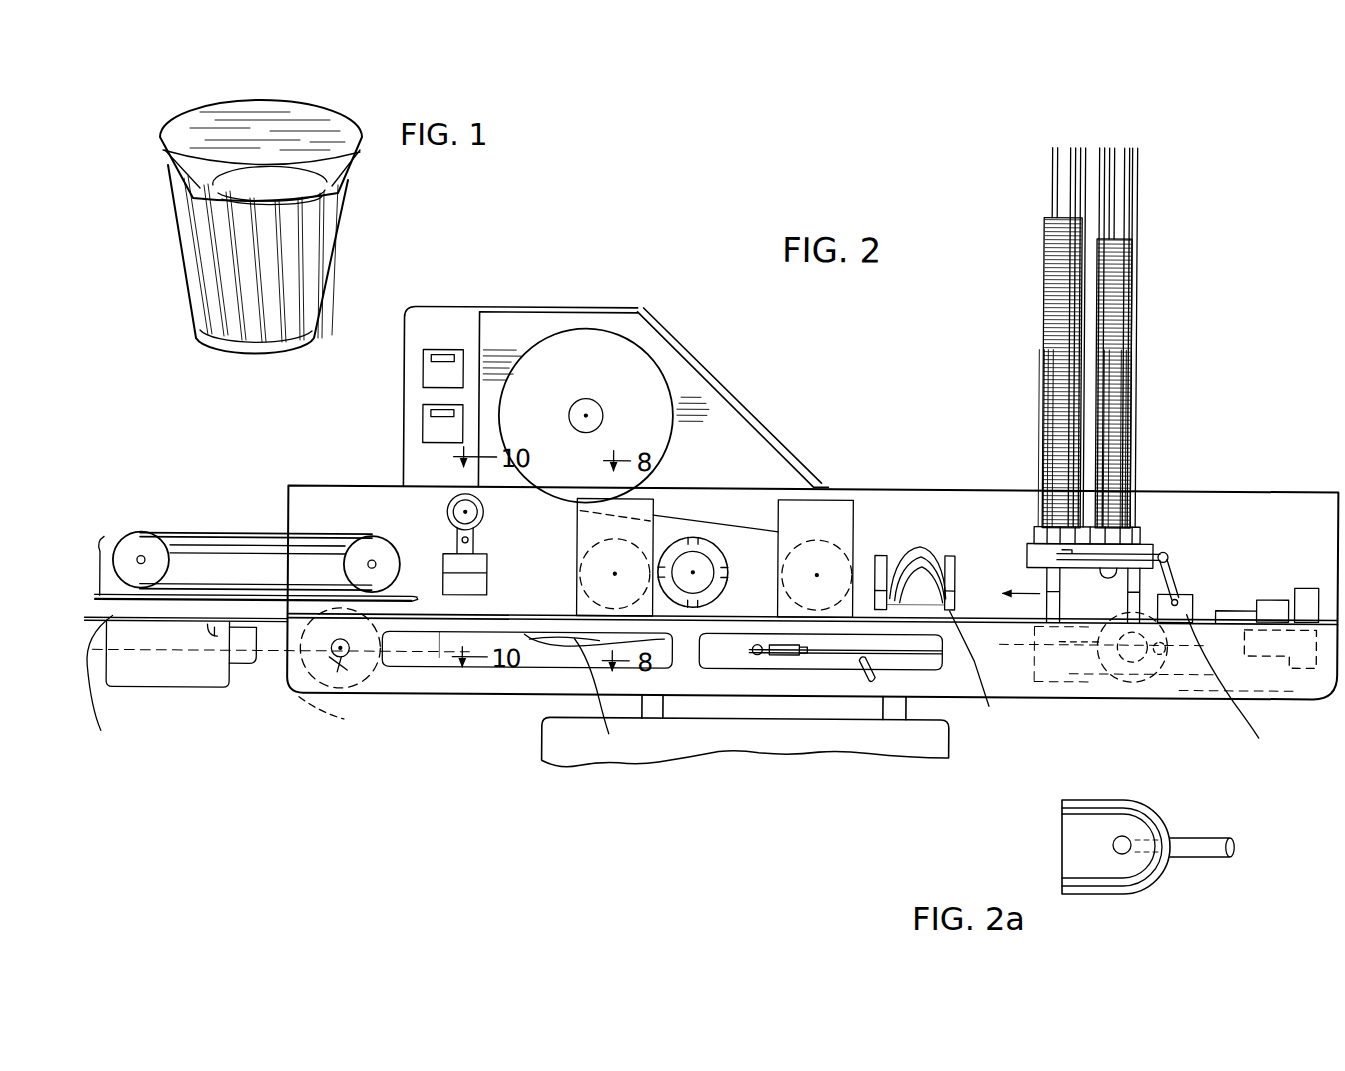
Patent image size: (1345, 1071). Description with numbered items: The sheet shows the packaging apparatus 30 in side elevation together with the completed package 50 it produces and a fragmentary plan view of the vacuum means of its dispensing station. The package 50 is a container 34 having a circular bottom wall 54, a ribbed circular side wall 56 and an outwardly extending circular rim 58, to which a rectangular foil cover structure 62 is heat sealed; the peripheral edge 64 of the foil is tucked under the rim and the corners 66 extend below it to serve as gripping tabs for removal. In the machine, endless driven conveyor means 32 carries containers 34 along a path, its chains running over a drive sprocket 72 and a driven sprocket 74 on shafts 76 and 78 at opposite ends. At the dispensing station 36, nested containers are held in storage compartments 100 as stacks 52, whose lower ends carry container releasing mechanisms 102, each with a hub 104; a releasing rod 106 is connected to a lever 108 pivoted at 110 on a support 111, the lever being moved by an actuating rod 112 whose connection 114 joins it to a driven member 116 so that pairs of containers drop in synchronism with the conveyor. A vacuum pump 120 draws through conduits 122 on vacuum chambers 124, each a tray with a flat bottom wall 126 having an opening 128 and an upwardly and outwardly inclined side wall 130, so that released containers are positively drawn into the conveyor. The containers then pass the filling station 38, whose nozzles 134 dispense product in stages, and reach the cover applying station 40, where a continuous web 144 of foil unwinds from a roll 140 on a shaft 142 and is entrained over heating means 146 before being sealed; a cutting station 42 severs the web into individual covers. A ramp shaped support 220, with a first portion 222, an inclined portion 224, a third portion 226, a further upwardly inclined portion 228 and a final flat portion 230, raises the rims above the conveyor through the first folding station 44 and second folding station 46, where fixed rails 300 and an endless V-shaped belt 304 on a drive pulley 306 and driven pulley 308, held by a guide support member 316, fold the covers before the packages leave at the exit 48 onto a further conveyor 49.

In FIG. 2, the packaging apparatus 30 is at (567, 245).
In FIG. 2, the endless driven conveyor means 32 is at (1178, 583).
In FIG. 1, the container 34 is at (188, 290).
In FIG. 2, the container 34 is at (953, 553).
In FIG. 2, the dispensing station 36 is at (1152, 520).
In FIG. 2, the filling station 38 is at (920, 543).
In FIG. 2, the cover applying station 40 is at (828, 478).
In FIG. 2, the cutting station 42 is at (722, 505).
In FIG. 2, the first folding station 44 is at (430, 510).
In FIG. 2, the second folding station 46 is at (205, 525).
In FIG. 2, the exit 48 is at (90, 568).
In FIG. 2, the further conveyor 49 is at (108, 690).
In FIG. 1, the completed package 50 is at (372, 236).
In FIG. 2, the cup stack 52 is at (205, 635).
In FIG. 1, the circular bottom wall 54 is at (275, 356).
In FIG. 1, the circular side wall 56 is at (180, 250).
In FIG. 1, the circular rim 58 is at (150, 140).
In FIG. 1, the cover structure 62 is at (267, 131).
In FIG. 1, the peripheral edge 64 is at (280, 175).
In FIG. 1, the corners 66 is at (185, 181).
In FIG. 2, the drive sprocket 72 is at (1152, 682).
In FIG. 2, the driven sprocket 74 is at (355, 685).
In FIG. 2, the shaft 76 is at (1112, 690).
In FIG. 2, the shaft 78 is at (335, 668).
In FIG. 2, the storage compartments 100 is at (1050, 182).
In FIG. 2, the container releasing mechanism 102 is at (1032, 543).
In FIG. 2, the hub 104 is at (1048, 530).
In FIG. 2, the releasing rod 106 is at (1166, 550).
In FIG. 2, the lever 108 is at (1193, 593).
In FIG. 2, the pivot 110 is at (1196, 601).
In FIG. 2, the support 111 is at (1243, 684).
In FIG. 2, the actuating rod 112 is at (835, 652).
In FIG. 2, the connection 114 is at (780, 660).
In FIG. 2, the driven member 116 is at (758, 656).
In FIG. 2, the vacuum pump 120 is at (1305, 583).
In FIG. 2, the conduits 122 is at (1080, 680).
In FIG. 2A, the conduits 122 is at (1200, 843).
In FIG. 2A, the vacuum chamber 124 is at (1054, 830).
In FIG. 2A, the flat bottom wall 126 is at (1062, 848).
In FIG. 2A, the opening 128 is at (1130, 852).
In FIG. 2, the inclined side wall 130 is at (880, 552).
In FIG. 2A, the inclined side wall 130 is at (1110, 882).
In FIG. 2, the nozzle 134 is at (985, 673).
In FIG. 2, the roll 140 is at (603, 352).
In FIG. 2, the shaft 142 is at (583, 415).
In FIG. 2, the continuous web 144 is at (683, 500).
In FIG. 2, the heating means 146 is at (608, 572).
In FIG. 2, the support 220 is at (530, 655).
In FIG. 2, the first portion 222 is at (600, 700).
In FIG. 2, the inclined portion 224 is at (525, 640).
In FIG. 2, the third portion 226 is at (445, 640).
In FIG. 2, the further upwardly inclined portion 228 is at (428, 640).
In FIG. 2, the final flat portion 230 is at (320, 665).
In FIG. 2, the fixed rails 300 is at (118, 684).
In FIG. 2, the endless V-shaped belt 304 is at (248, 535).
In FIG. 2, the drive pulley 306 is at (372, 562).
In FIG. 2, the driven pulley 308 is at (140, 560).
In FIG. 2, the guide support member 316 is at (112, 535).